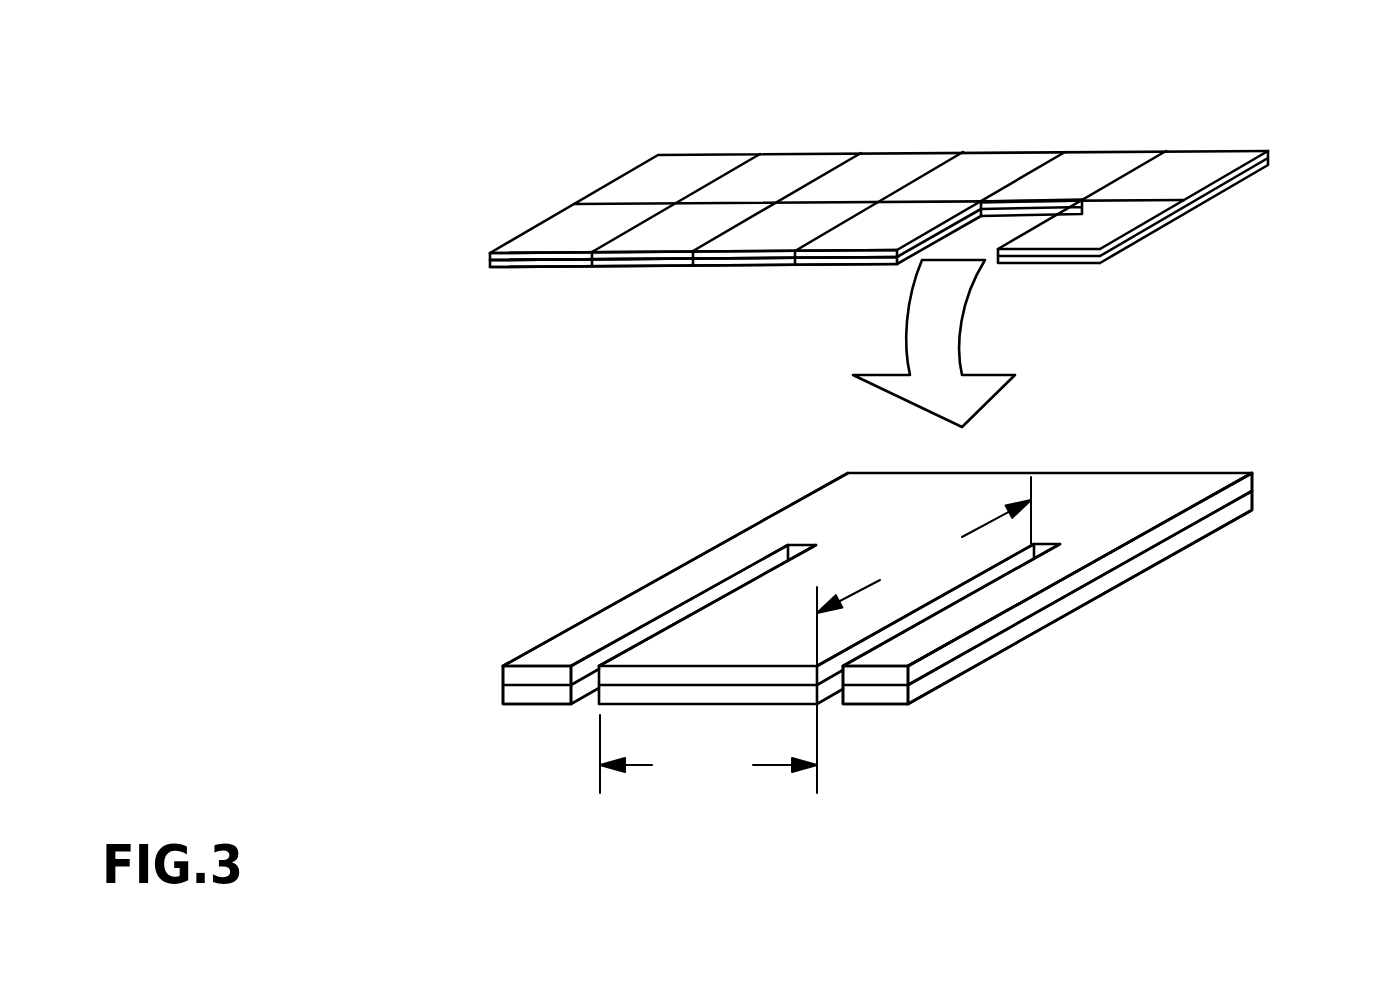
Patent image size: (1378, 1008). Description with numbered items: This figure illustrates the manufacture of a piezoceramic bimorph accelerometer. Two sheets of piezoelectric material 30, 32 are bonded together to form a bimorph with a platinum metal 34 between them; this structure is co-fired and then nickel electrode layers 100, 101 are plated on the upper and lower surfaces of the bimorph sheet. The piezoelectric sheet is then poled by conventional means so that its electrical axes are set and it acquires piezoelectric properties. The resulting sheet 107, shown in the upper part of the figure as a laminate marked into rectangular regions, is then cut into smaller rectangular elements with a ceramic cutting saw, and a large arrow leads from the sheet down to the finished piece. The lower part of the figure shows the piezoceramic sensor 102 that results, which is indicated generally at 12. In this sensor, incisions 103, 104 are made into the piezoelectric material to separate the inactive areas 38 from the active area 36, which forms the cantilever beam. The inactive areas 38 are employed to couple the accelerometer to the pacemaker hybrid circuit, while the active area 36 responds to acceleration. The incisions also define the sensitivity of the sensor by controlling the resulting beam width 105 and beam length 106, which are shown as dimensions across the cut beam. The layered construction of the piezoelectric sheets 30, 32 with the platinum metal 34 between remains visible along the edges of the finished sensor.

The lead frame base 12 is at (522, 622).
The sheet of piezoelectric material 30 is at (497, 252).
The sheet of piezoelectric material 32 is at (490, 264).
The platinum metal 34 is at (1053, 607).
The active area 36 is at (901, 523).
The inactive areas 38 is at (658, 597).
The nickel electrode layer 100 is at (620, 268).
The nickel electrode layer 101 is at (1003, 167).
The piezoceramic sensor 102 is at (995, 231).
The incision 103 is at (588, 697).
The incision 104 is at (836, 700).
The beam width 105 is at (708, 690).
The beam length 106 is at (924, 545).
The sheet 107 is at (837, 146).